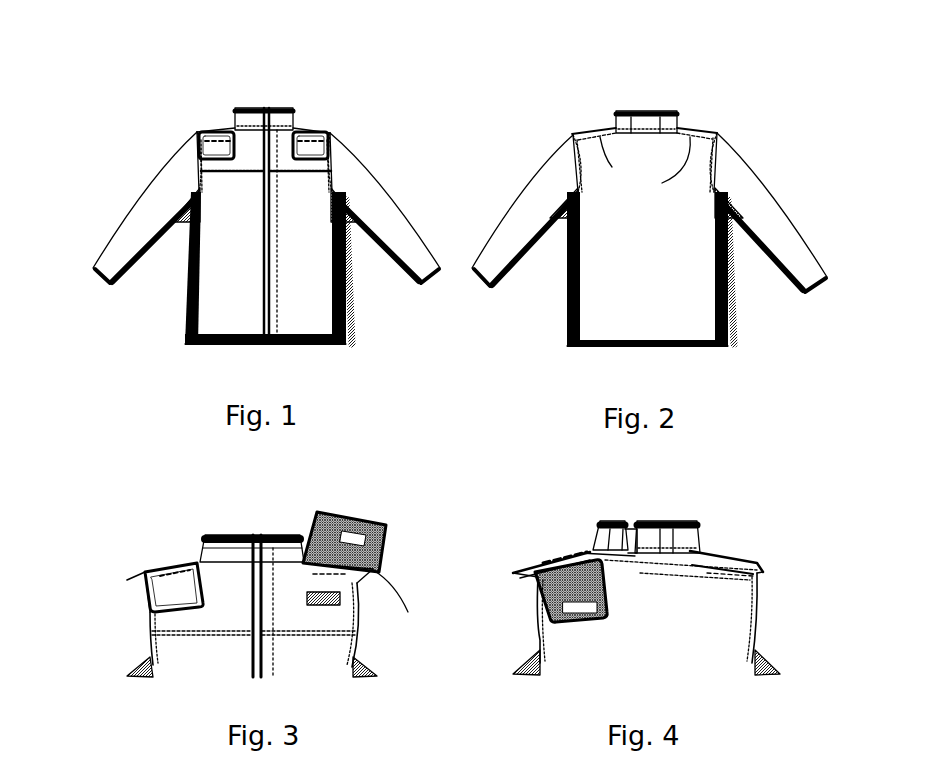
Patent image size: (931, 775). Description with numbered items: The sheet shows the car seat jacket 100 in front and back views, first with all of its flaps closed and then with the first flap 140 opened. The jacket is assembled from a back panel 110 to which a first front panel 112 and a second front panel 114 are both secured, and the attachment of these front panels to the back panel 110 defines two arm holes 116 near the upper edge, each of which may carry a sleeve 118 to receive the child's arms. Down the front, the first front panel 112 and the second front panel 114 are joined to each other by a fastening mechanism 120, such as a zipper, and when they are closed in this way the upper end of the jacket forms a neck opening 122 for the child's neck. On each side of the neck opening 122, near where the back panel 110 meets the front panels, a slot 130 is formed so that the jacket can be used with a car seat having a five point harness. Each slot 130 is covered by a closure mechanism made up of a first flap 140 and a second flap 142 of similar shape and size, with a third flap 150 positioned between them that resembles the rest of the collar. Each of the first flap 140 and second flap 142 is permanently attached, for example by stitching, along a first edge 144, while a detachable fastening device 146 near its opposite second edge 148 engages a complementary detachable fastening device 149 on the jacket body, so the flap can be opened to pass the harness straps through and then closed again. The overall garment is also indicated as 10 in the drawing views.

In FIG. 1, the garment 10 is at (163, 373).
In FIG. 3, the garment 10 is at (130, 725).
In FIG. 2, the car seat jacket 100 is at (738, 115).
In FIG. 4, the car seat jacket 100 is at (767, 510).
In FIG. 2, the back panel 110 is at (597, 293).
In FIG. 4, the back panel 110 is at (717, 643).
In FIG. 1, the first front panel 112 is at (230, 197).
In FIG. 3, the first front panel 112 is at (193, 667).
In FIG. 1, the second front panel 114 is at (310, 327).
In FIG. 3, the second front panel 114 is at (330, 663).
In FIG. 1, the arm holes 116 is at (188, 147).
In FIG. 2, the arm holes 116 is at (575, 167).
In FIG. 3, the arm holes 116 is at (150, 620).
In FIG. 4, the arm holes 116 is at (486, 622).
In FIG. 1, the sleeve 118 is at (128, 252).
In FIG. 2, the sleeve 118 is at (477, 190).
In FIG. 1, the fastening mechanism 120 is at (262, 228).
In FIG. 1, the neck opening 122 is at (262, 115).
In FIG. 2, the neck opening 122 is at (628, 113).
In FIG. 3, the neck opening 122 is at (218, 543).
In FIG. 4, the neck opening 122 is at (687, 523).
In FIG. 1, the slot 130 is at (215, 135).
In FIG. 3, the slot 130 is at (170, 567).
In FIG. 4, the slot 130 is at (560, 560).
In FIG. 1, the first flap 140 is at (240, 140).
In FIG. 3, the first flap 140 is at (157, 590).
In FIG. 4, the first flap 140 is at (723, 550).
In FIG. 1, the second flap 142 is at (308, 147).
In FIG. 3, the second flap 142 is at (333, 557).
In FIG. 4, the second flap 142 is at (600, 588).
In FIG. 2, the first edge 144 is at (645, 167).
In FIG. 4, the first edge 144 is at (728, 567).
In FIG. 4, the detachable fastening device 146 is at (573, 612).
In FIG. 4, the second edge 148 is at (573, 630).
In FIG. 3, the complementary detachable fastening device 149 is at (310, 603).
In FIG. 4, the third flap 150 is at (652, 535).